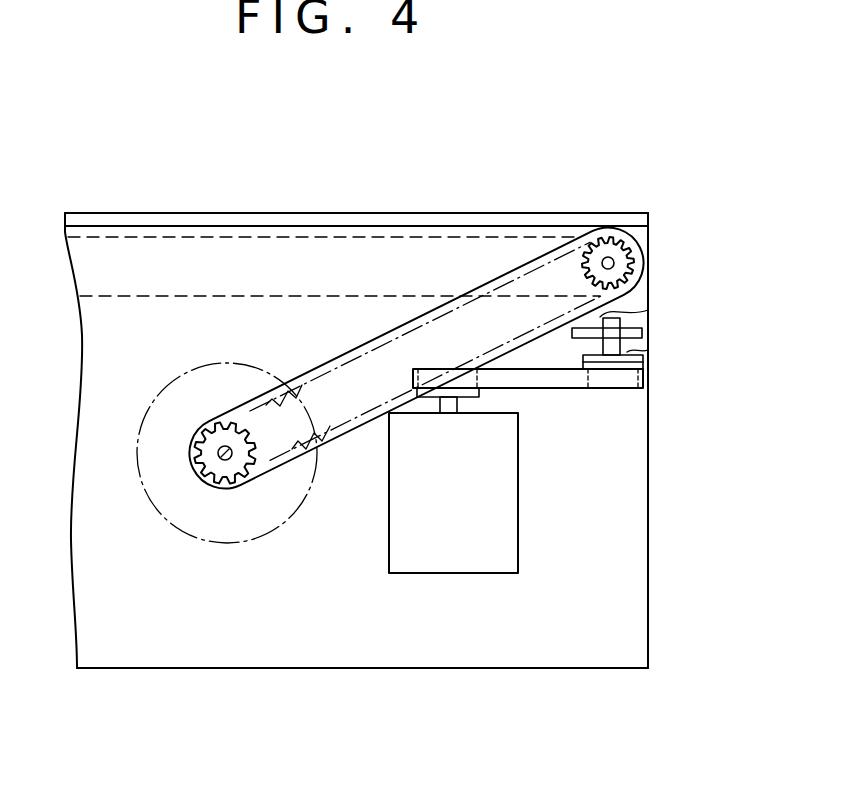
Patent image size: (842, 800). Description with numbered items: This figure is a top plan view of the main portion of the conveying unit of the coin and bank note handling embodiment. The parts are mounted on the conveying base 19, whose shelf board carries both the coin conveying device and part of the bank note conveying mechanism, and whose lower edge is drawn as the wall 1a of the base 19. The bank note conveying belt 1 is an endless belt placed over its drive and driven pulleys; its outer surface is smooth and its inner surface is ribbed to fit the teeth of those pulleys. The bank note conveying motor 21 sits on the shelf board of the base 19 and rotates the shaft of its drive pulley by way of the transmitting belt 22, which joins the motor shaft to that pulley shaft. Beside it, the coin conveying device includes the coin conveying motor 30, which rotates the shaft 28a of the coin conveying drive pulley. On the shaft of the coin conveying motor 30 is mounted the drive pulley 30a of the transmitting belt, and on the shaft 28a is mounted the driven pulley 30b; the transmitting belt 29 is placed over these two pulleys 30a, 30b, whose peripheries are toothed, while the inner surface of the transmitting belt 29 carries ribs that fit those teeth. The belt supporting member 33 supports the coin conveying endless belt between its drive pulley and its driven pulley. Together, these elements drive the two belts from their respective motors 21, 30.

The bank note conveying belt 1 is at (267, 213).
The frame bottom wall 1a is at (237, 668).
The base 19 is at (174, 213).
The bank note conveying motor 21 is at (210, 545).
The transmitting belt 22 is at (495, 280).
The shaft of the drive pulley 28a is at (646, 351).
The transmitting belt 29 is at (567, 387).
The coin conveying motor 30 is at (458, 565).
The drive pulley of the transmitting belt 30a is at (485, 378).
The driven pulley of the transmitting belt 30b is at (652, 380).
The belt supporting member 33 is at (645, 335).